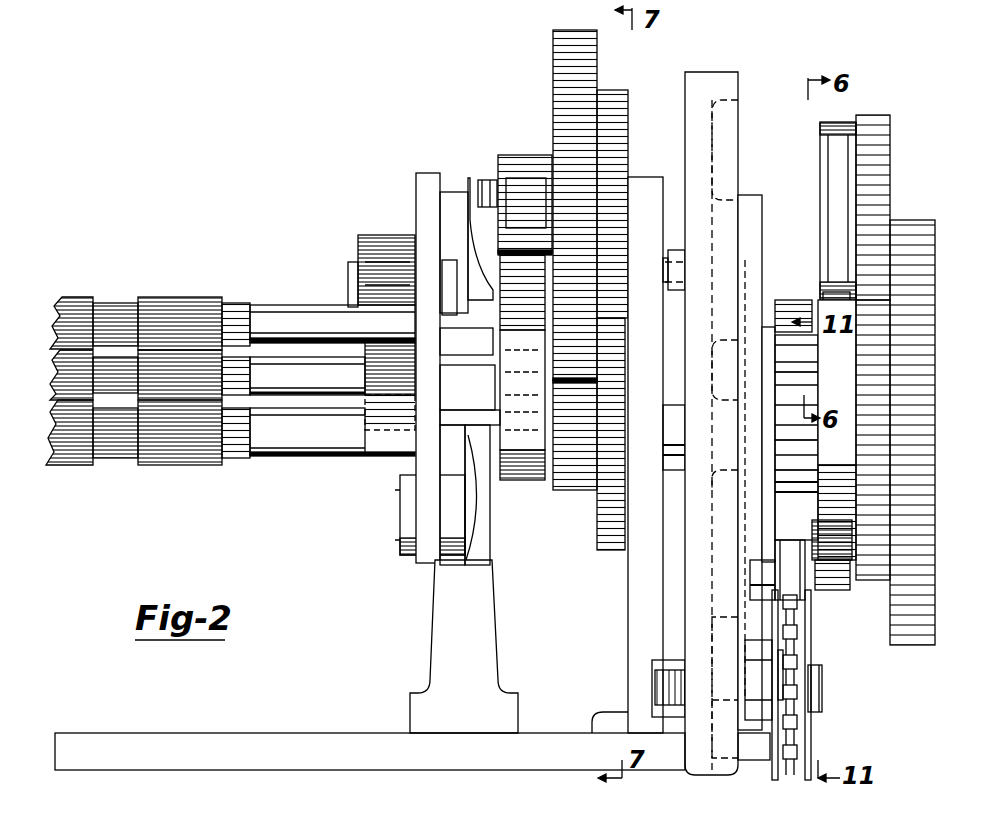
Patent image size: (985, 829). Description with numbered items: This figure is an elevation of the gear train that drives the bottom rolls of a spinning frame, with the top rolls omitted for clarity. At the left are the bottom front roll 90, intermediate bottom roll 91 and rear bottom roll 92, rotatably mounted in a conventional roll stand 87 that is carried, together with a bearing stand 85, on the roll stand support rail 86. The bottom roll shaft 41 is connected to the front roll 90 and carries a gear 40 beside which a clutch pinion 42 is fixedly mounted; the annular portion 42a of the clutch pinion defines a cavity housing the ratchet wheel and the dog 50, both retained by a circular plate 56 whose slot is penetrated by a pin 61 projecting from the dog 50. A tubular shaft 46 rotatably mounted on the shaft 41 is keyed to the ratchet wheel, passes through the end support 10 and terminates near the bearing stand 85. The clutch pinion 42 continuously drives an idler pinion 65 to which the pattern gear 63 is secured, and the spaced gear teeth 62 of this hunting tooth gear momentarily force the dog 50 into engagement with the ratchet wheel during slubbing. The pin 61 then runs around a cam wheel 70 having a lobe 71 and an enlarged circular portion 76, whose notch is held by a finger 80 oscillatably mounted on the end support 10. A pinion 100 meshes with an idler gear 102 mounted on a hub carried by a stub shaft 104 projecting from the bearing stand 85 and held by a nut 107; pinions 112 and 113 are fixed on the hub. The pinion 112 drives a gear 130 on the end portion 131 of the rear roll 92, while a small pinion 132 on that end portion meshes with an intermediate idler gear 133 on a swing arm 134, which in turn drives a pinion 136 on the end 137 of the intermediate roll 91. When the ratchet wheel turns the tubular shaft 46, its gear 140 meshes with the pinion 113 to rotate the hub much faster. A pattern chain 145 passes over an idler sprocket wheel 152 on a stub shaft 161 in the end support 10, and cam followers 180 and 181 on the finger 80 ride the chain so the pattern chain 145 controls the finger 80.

The end support 10 is at (738, 96).
The gear 40 is at (930, 341).
The bottom roll shaft 41 is at (328, 450).
The clutch pinion 42 is at (878, 425).
The annular portion 42a is at (837, 430).
The tubular shaft 46 is at (672, 458).
The dog 50 is at (826, 290).
The circular plate 56 is at (812, 465).
The pin 61 is at (797, 345).
The gear teeth 62 is at (822, 130).
The pattern gear 63 is at (826, 160).
The idler pinion 65 is at (890, 172).
The cam wheel 70 is at (800, 498).
The lobe 71 is at (806, 378).
The enlarged circular portion 76 is at (766, 425).
The finger 80 is at (760, 584).
The bearing stand 85 is at (628, 610).
The roll stand support rail 86 is at (356, 733).
The roll stand 87 is at (436, 625).
The bottom front roll 90 is at (188, 466).
The intermediate bottom roll 91 is at (244, 346).
The rear bottom roll 92 is at (238, 310).
The pinion 100 is at (560, 490).
The idler gear 102 is at (596, 62).
The stub shaft 104 is at (492, 190).
The nut 107 is at (478, 236).
The pinion 112 is at (527, 160).
The pinion 113 is at (628, 132).
The gear 130 is at (502, 398).
The end portion 131 is at (312, 318).
The small pinion 132 is at (363, 368).
The intermediate idler gear 133 is at (358, 238).
The swing arm 134 is at (400, 545).
The pinion 136 is at (366, 410).
The end 137 is at (278, 400).
The gear 140 is at (597, 545).
The pattern chain 145 is at (805, 726).
The idler sprocket wheel 152 is at (790, 656).
The stub shaft 161 is at (820, 687).
The cam follower 180 is at (793, 552).
The cam follower 181 is at (836, 588).